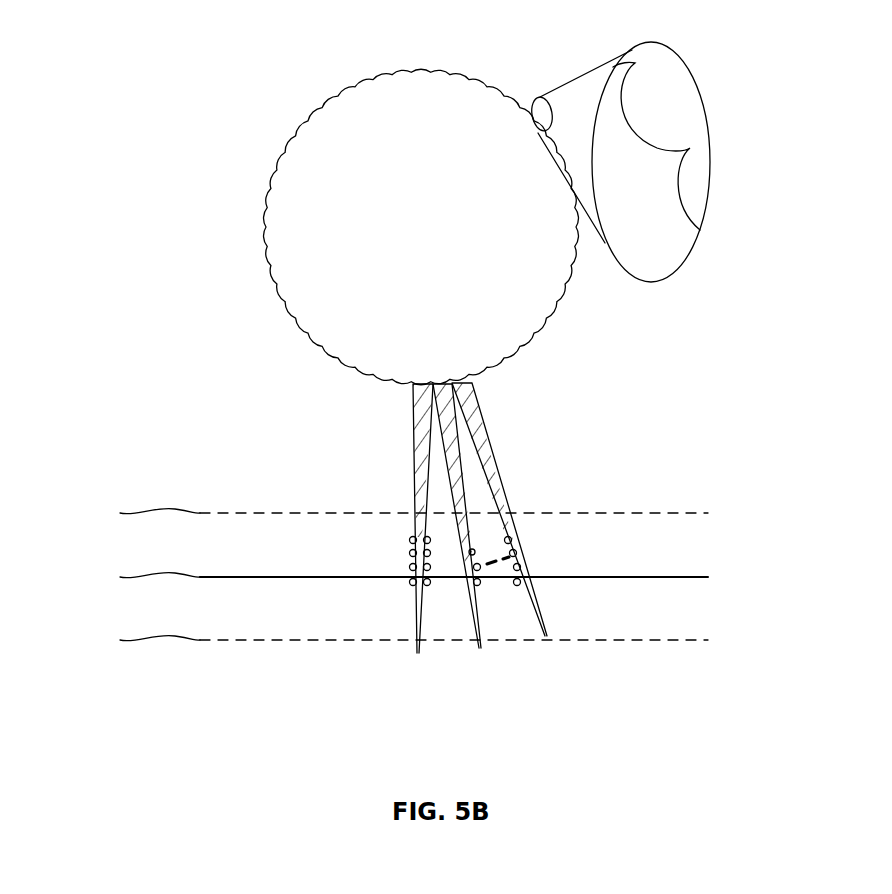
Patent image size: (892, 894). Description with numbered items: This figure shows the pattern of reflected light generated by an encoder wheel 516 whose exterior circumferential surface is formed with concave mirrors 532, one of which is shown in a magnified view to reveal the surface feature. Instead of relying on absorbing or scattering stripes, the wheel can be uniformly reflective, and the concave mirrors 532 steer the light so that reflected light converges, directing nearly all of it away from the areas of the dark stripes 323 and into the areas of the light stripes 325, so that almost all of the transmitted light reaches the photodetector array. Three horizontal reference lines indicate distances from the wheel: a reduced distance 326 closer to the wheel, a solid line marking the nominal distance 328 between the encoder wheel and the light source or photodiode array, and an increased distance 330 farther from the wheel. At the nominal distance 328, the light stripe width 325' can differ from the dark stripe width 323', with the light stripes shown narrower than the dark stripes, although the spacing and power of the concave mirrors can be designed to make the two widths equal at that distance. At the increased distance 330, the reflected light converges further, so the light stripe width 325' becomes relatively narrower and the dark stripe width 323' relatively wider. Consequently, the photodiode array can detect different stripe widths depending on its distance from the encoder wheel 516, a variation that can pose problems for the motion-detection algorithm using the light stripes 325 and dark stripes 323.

The encoder wheel 516 is at (290, 207).
The concave mirror 532 is at (657, 148).
The light stripes 325 is at (374, 518).
The dark stripes 323 is at (558, 509).
The reduced distance 326 is at (375, 514).
The nominal distance 328 is at (375, 578).
The increased distance 330 is at (375, 641).
The light stripe width 325' is at (353, 561).
The dark stripe width 323' is at (514, 616).